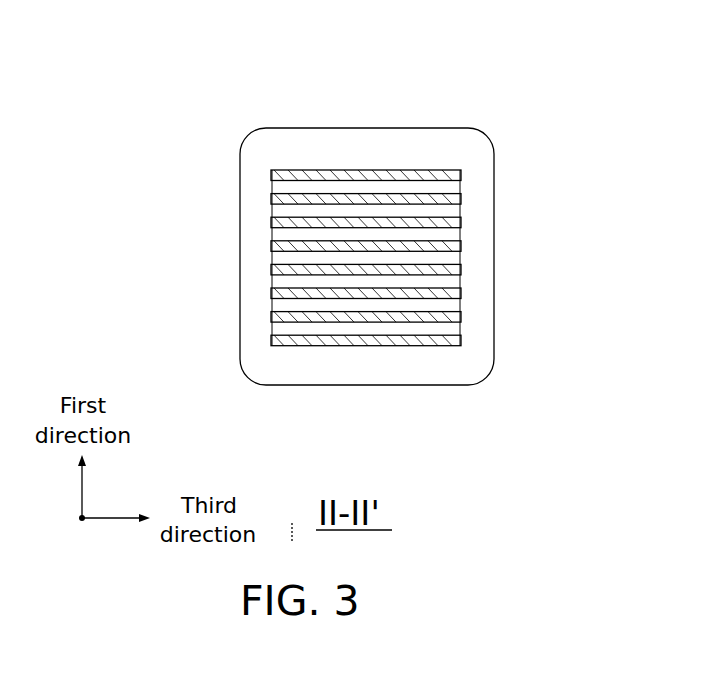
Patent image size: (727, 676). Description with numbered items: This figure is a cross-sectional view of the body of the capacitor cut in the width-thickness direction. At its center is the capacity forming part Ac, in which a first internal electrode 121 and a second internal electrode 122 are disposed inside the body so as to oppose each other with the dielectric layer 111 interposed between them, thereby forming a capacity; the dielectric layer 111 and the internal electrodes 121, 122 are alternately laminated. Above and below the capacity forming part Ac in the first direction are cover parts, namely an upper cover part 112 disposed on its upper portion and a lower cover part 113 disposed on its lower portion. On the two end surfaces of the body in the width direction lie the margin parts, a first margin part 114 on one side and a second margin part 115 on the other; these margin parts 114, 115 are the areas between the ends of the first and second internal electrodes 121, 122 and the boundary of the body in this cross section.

The dielectric layer 111 is at (463, 188).
The upper cover part 112 is at (365, 136).
The lower cover part 113 is at (362, 380).
The first margin part 114 is at (247, 287).
The second margin part 115 is at (487, 288).
The first internal electrode 121 is at (462, 172).
The second internal electrode 122 is at (461, 200).
The capacity forming part Ac is at (362, 241).